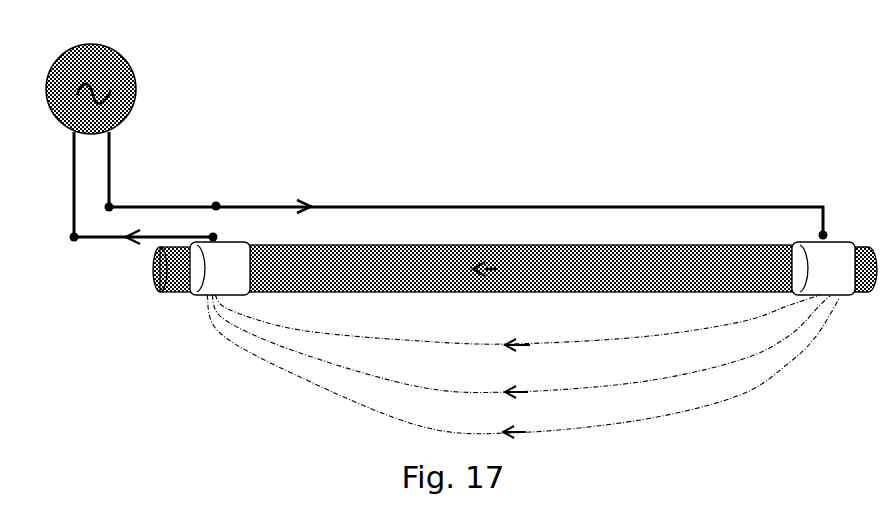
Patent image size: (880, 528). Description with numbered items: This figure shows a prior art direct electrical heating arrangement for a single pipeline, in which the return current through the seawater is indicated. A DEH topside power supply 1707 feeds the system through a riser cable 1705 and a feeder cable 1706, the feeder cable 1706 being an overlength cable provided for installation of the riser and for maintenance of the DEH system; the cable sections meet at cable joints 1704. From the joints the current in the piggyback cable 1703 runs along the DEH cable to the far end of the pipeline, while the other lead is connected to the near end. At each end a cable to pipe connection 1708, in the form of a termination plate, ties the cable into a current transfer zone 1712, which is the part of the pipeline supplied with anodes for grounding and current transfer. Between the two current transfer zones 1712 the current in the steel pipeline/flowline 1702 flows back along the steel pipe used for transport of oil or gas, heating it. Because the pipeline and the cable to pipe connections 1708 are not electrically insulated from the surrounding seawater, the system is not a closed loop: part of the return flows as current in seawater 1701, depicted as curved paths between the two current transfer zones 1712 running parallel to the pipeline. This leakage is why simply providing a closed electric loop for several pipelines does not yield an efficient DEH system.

The current in seawater 1701 is at (523, 366).
The current in steel pipeline/flowline 1702 is at (515, 268).
The current in piggyback cable 1703 is at (466, 203).
The cable joints 1704 is at (106, 208).
The riser cable 1705 is at (74, 165).
The feeder cable 1706 is at (140, 208).
The DEH topside power supply 1707 is at (91, 80).
The cable to pipe connection 1708 is at (217, 235).
The current transfer zone 1712 is at (522, 268).